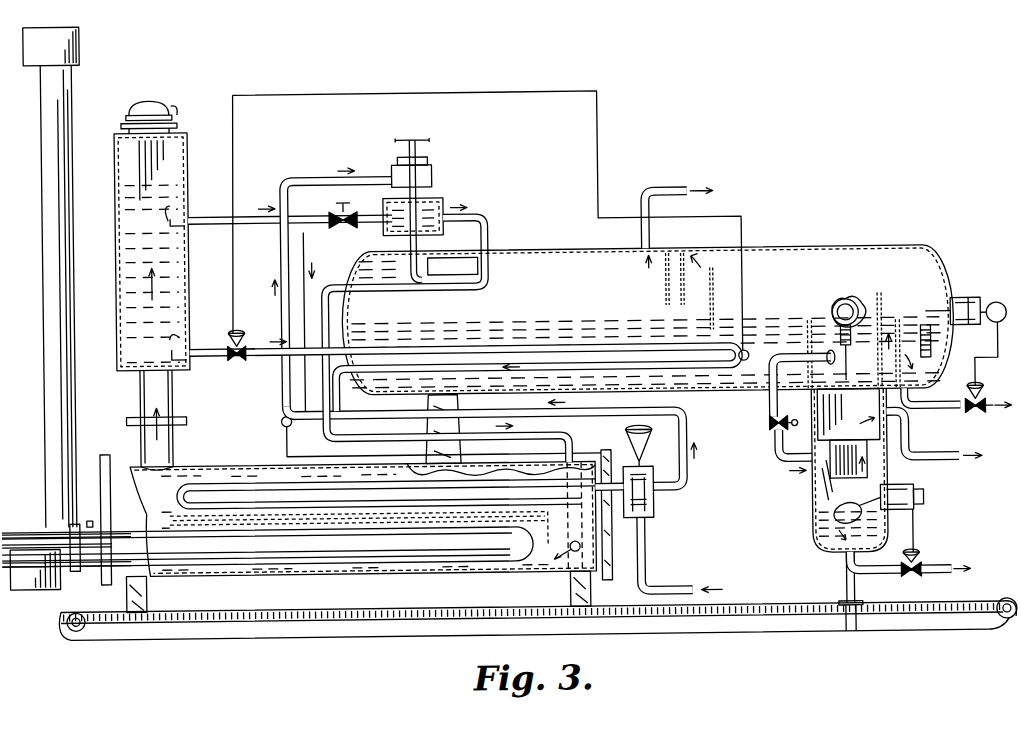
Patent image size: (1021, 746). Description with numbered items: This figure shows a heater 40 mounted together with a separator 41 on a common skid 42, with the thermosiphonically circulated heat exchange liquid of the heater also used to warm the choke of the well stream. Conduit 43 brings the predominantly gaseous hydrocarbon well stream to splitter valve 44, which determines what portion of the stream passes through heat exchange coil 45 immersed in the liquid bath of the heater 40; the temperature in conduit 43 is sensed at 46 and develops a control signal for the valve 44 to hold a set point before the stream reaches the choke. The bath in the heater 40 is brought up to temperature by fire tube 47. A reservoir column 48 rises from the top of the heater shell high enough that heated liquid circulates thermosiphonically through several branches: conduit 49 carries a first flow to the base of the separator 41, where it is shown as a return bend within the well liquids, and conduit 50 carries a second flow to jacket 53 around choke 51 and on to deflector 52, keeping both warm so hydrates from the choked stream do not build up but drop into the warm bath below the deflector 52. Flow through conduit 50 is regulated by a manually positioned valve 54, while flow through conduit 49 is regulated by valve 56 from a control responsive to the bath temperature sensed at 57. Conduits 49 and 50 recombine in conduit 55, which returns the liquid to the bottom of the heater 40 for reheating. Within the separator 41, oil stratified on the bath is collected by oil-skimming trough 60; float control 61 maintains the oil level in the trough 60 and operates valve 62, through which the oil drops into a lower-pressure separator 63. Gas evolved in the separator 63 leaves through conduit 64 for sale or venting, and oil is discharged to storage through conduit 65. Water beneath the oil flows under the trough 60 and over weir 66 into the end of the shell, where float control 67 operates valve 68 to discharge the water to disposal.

The heater 40 is at (218, 460).
The separator 41 is at (827, 250).
The skid 42 is at (778, 636).
The conduit 43 is at (283, 245).
The splitter valve 44 is at (649, 481).
The heat exchange coil 45 is at (260, 462).
The temperature sensing point 46 is at (283, 415).
The fire tube 47 is at (383, 572).
The reservoir column 48 is at (190, 288).
The conduit 49 is at (200, 345).
The conduit 50 is at (196, 214).
The choke 51 is at (434, 179).
The deflector 52 is at (494, 248).
The jacket 53 is at (445, 206).
The valve 54 is at (345, 226).
The conduit 55 is at (332, 386).
The valve 56 is at (243, 342).
The temperature sensing point 57 is at (744, 364).
The oil-skimming trough 60 is at (797, 321).
The float control 61 is at (846, 302).
The valve 62 is at (768, 429).
The separator 63 is at (811, 515).
The conduit 64 is at (908, 454).
The conduit 65 is at (919, 569).
The weir 66 is at (899, 322).
The float control 67 is at (977, 303).
The valve 68 is at (987, 402).